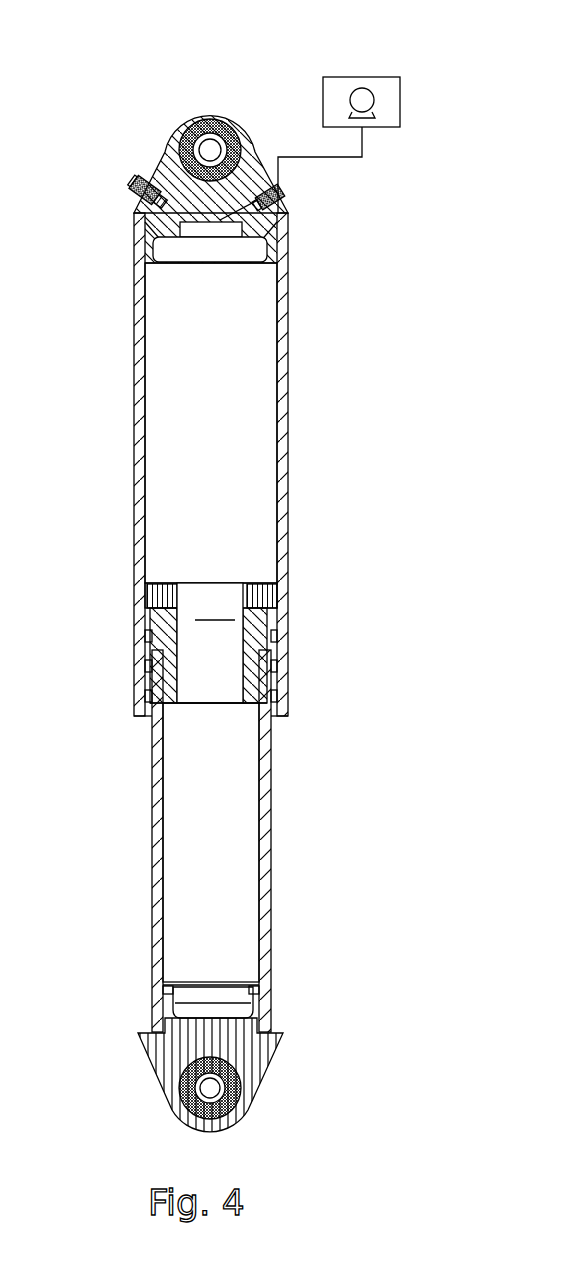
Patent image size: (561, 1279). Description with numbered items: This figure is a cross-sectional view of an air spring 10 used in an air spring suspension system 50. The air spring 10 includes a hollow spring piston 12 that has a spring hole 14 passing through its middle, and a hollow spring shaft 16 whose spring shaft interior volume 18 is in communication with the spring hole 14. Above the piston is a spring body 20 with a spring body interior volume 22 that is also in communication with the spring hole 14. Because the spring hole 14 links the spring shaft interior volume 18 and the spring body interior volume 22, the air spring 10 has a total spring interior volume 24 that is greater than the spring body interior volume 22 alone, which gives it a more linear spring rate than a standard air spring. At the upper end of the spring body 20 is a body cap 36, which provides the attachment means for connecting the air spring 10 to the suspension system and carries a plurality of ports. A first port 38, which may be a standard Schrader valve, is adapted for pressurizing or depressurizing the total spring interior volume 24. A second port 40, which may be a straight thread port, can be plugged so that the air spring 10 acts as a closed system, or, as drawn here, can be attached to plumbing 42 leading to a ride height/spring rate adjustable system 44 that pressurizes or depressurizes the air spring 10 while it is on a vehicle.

The air spring 10 is at (193, 585).
The hollow spring piston 12 is at (128, 638).
The spring hole 14 is at (255, 644).
The hollow spring shaft 16 is at (272, 822).
The spring shaft interior volume 18 is at (212, 850).
The spring body 20 is at (288, 477).
The spring body interior volume 22 is at (218, 438).
The total spring interior volume 24 is at (85, 603).
The body cap 36 is at (228, 112).
The first port 38 is at (133, 193).
The second port 40 is at (284, 203).
The plumbing 42 is at (364, 146).
The ride height/spring rate adjustable system 44 is at (388, 77).
The air spring suspension system 50 is at (229, 568).